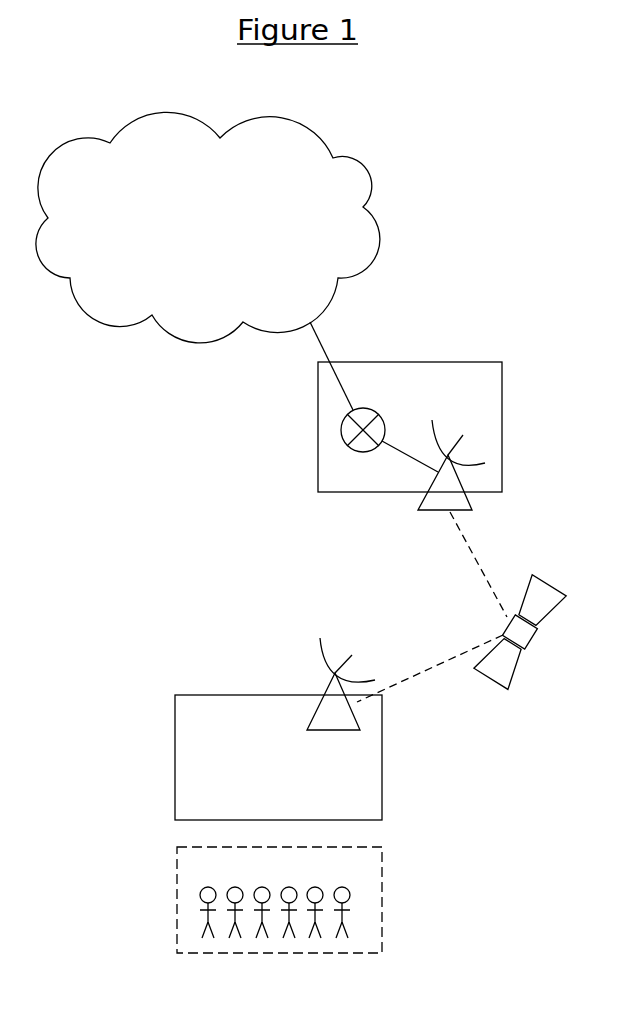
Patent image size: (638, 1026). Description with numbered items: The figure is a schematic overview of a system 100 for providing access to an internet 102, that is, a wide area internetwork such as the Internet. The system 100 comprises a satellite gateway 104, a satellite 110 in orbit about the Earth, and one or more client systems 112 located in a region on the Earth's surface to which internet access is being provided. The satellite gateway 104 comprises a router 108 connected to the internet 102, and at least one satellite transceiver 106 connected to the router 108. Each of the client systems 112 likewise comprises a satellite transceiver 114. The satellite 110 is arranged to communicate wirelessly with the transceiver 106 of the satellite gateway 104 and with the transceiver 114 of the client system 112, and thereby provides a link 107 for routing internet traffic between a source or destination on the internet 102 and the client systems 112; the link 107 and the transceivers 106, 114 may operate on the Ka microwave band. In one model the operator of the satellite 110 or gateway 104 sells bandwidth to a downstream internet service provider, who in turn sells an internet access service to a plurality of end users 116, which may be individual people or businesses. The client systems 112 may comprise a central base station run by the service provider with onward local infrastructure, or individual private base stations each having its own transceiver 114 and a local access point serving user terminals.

The system 100 is at (80, 484).
The internet 102 is at (363, 170).
The satellite gateway 104 is at (443, 362).
The satellite transceiver 106 is at (427, 513).
The link 107 is at (480, 562).
The router 108 is at (340, 437).
The satellite 110 is at (553, 578).
The client systems 112 is at (175, 738).
The satellite transceiver 114 is at (340, 730).
The end users 116 is at (383, 875).